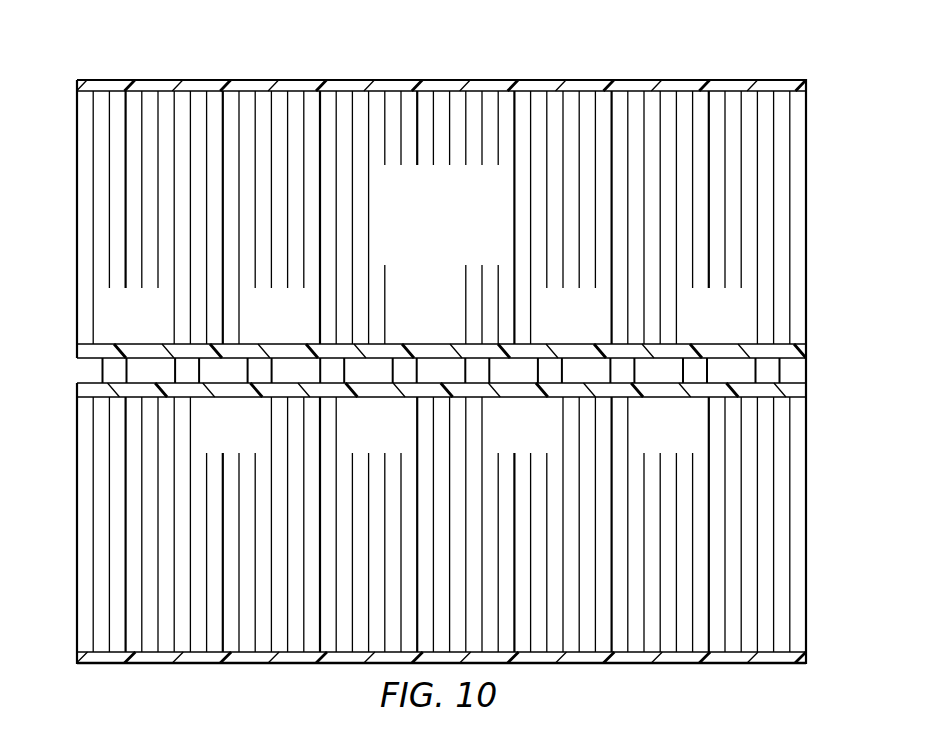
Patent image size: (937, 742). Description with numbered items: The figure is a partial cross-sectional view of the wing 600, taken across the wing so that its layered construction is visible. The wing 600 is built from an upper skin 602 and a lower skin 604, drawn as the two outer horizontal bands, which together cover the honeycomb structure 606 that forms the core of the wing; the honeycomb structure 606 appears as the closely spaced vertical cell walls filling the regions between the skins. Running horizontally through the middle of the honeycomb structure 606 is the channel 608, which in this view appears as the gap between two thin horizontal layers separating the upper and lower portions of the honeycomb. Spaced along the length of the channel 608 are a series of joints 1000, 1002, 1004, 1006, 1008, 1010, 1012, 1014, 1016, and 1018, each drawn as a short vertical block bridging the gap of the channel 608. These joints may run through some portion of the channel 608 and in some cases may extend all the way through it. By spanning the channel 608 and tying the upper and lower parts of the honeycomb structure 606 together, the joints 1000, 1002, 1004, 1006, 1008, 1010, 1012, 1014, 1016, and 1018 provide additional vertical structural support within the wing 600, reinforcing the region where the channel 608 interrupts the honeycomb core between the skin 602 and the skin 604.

The wing 600 is at (268, 57).
The skin 602 is at (588, 79).
The skin 604 is at (637, 663).
The honeycomb structure 606 is at (458, 250).
The channel 608 is at (92, 382).
The joint 1000 is at (128, 371).
The joint 1002 is at (200, 367).
The joint 1004 is at (272, 371).
The joint 1006 is at (345, 367).
The joint 1008 is at (417, 371).
The joint 1010 is at (490, 367).
The joint 1012 is at (562, 370).
The joint 1014 is at (635, 367).
The joint 1016 is at (707, 370).
The joint 1018 is at (780, 368).